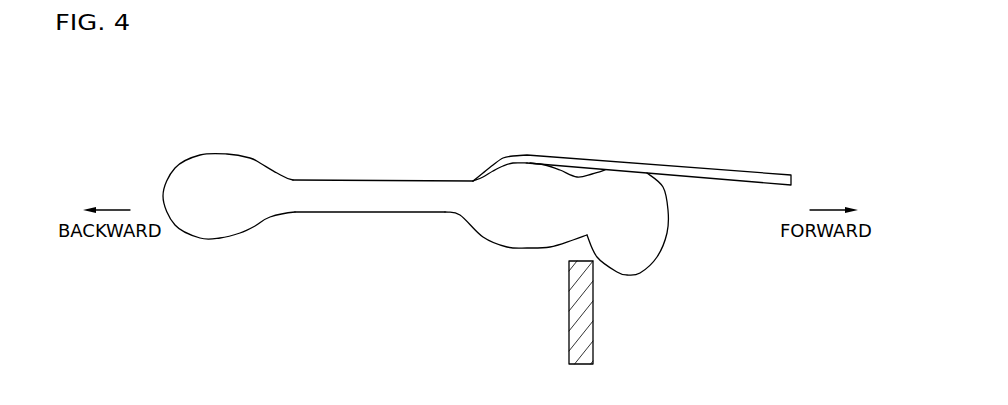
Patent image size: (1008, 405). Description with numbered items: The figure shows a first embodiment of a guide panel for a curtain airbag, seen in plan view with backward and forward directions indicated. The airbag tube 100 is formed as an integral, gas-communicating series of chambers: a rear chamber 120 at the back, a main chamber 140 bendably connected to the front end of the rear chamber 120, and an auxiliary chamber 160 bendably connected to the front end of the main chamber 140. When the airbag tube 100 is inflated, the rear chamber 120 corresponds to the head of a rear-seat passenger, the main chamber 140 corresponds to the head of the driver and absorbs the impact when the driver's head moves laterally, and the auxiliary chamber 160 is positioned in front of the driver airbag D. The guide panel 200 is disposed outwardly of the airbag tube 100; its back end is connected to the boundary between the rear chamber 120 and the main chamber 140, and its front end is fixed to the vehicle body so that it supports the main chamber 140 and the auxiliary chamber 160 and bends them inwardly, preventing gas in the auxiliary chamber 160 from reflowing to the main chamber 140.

The airbag tube 100 is at (359, 150).
The rear chamber 120 is at (220, 232).
The main chamber 140 is at (490, 220).
The auxiliary chamber 160 is at (650, 250).
The guide panel 200 is at (638, 163).
The driver airbag D is at (585, 347).